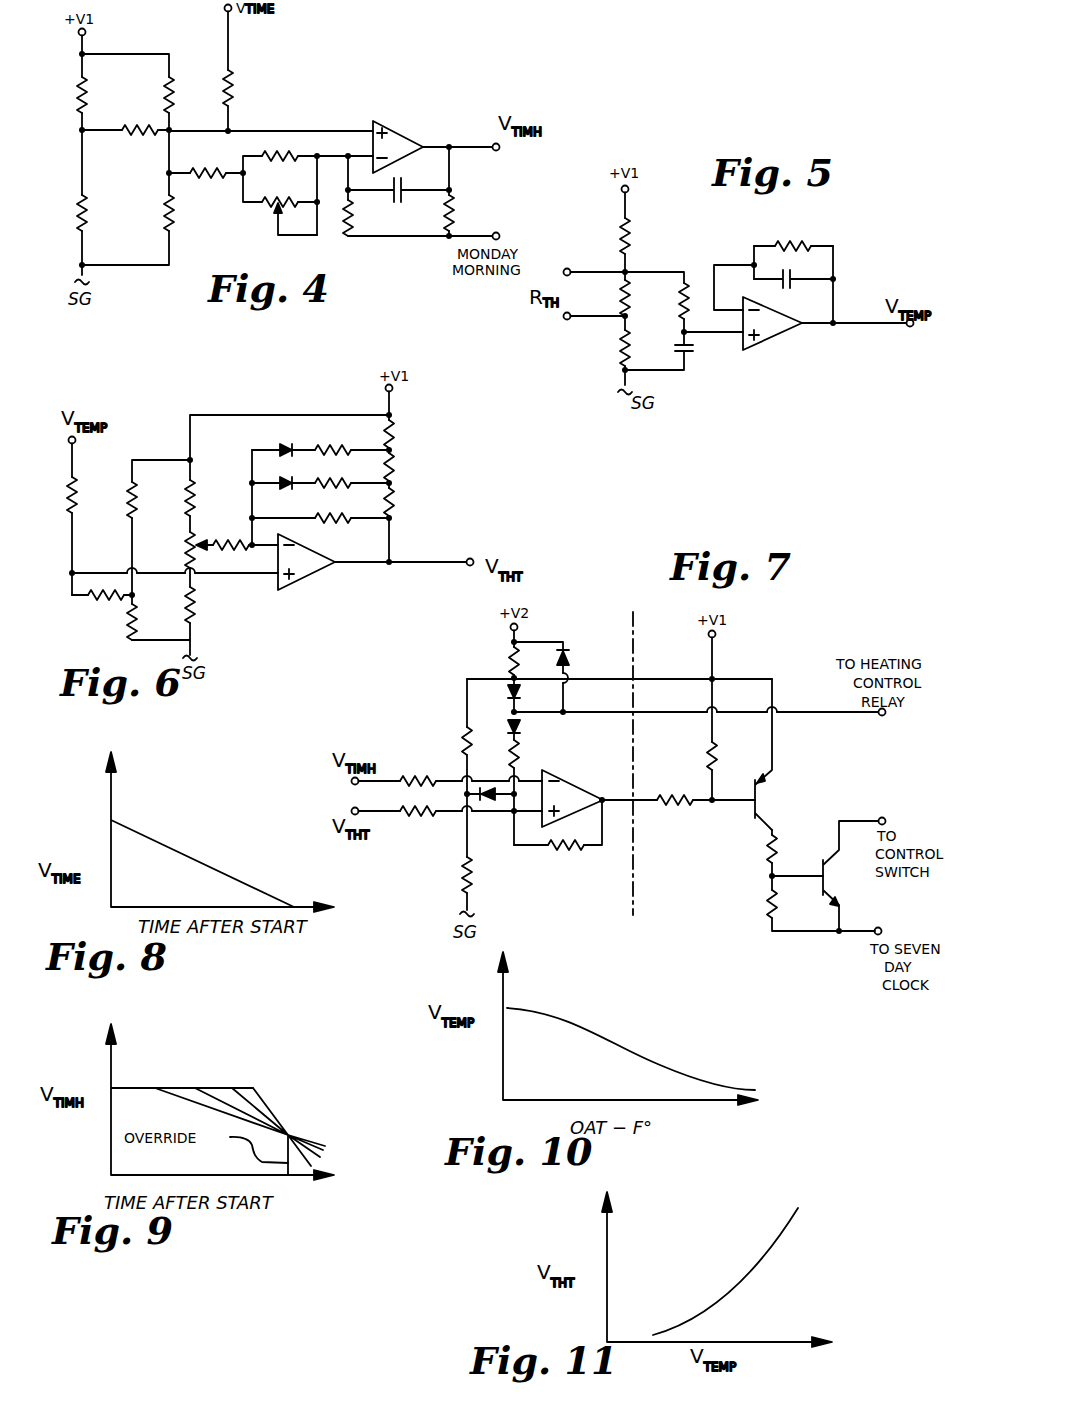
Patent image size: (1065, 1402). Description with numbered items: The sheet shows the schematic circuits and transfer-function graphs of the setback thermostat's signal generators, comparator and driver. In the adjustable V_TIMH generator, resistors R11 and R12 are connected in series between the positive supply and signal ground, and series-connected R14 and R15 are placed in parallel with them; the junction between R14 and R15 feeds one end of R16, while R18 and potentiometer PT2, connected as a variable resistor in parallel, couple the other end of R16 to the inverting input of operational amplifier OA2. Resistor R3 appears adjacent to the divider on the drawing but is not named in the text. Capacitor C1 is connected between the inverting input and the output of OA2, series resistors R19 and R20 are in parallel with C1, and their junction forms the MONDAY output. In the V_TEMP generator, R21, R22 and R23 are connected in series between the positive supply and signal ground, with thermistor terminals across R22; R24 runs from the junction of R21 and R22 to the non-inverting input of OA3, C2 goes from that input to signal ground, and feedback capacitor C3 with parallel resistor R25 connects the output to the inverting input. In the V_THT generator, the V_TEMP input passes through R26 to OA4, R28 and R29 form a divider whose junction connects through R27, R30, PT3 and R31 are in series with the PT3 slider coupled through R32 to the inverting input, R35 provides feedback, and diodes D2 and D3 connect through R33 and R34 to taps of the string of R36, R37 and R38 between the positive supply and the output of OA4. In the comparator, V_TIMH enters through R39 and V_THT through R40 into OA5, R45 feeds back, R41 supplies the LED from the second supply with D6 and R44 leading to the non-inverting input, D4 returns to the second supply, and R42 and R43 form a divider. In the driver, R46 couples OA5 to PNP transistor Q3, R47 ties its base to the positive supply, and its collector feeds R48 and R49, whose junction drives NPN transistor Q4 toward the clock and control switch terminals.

In FIG. 4, the resistor R11 is at (64, 95).
In FIG. 4, the resistor R12 is at (64, 213).
In FIG. 4, the resistor R14 is at (152, 95).
In FIG. 4, the resistor R15 is at (187, 213).
In FIG. 4, the resistor R3 is at (125, 143).
In FIG. 4, the resistor R16 is at (206, 185).
In FIG. 4, the resistor R18 is at (280, 193).
In FIG. 4, the potentiometer PT2 is at (264, 240).
In FIG. 4, the operational amplifier OA2 is at (398, 134).
In FIG. 4, the resistor R19 is at (365, 218).
In FIG. 4, the capacitor C1 is at (398, 197).
In FIG. 4, the resistor R20 is at (466, 191).
In FIG. 5, the resistor R21 is at (644, 236).
In FIG. 5, the resistor R22 is at (644, 298).
In FIG. 5, the resistor R23 is at (644, 348).
In FIG. 5, the resistor R24 is at (667, 304).
In FIG. 5, the capacitor C2 is at (692, 356).
In FIG. 5, the operational amplifier OA3 is at (771, 339).
In FIG. 5, the resistor R25 is at (793, 234).
In FIG. 5, the capacitor C3 is at (793, 288).
In FIG. 6, the resistor R26 is at (55, 495).
In FIG. 6, the resistor R27 is at (102, 605).
In FIG. 6, the resistor R28 is at (150, 500).
In FIG. 6, the resistor R29 is at (150, 622).
In FIG. 6, the resistor R30 is at (208, 498).
In FIG. 6, the potentiometer PT3 is at (178, 550).
In FIG. 6, the resistor R31 is at (208, 605).
In FIG. 6, the resistor R32 is at (245, 555).
In FIG. 6, the diode D2 is at (283, 439).
In FIG. 6, the diode D3 is at (283, 473).
In FIG. 6, the resistor R33 is at (352, 439).
In FIG. 6, the resistor R34 is at (352, 472).
In FIG. 6, the resistor R35 is at (320, 507).
In FIG. 6, the resistor R36 is at (408, 434).
In FIG. 6, the resistor R37 is at (408, 467).
In FIG. 6, the resistor R38 is at (408, 502).
In FIG. 6, the operational amplifier OA4 is at (299, 581).
In FIG. 7, the resistor R41 is at (497, 661).
In FIG. 7, the diode D4 is at (581, 660).
In FIG. 7, the light-emitting diode LED is at (531, 695).
In FIG. 7, the diode D6 is at (528, 728).
In FIG. 7, the resistor R44 is at (533, 754).
In FIG. 7, the resistor R42 is at (448, 741).
In FIG. 7, the resistor R43 is at (448, 875).
In FIG. 7, the resistor R39 is at (451, 769).
In FIG. 7, the resistor R40 is at (451, 823).
In FIG. 7, the operational amplifier OA5 is at (576, 786).
In FIG. 7, the resistor R45 is at (556, 852).
In FIG. 7, the resistor R46 is at (679, 812).
In FIG. 7, the resistor R47 is at (731, 756).
In FIG. 7, the PNP transistor Q3 is at (775, 754).
In FIG. 7, the resistor R48 is at (791, 849).
In FIG. 7, the resistor R49 is at (791, 904).
In FIG. 7, the NPN transistor Q4 is at (850, 876).